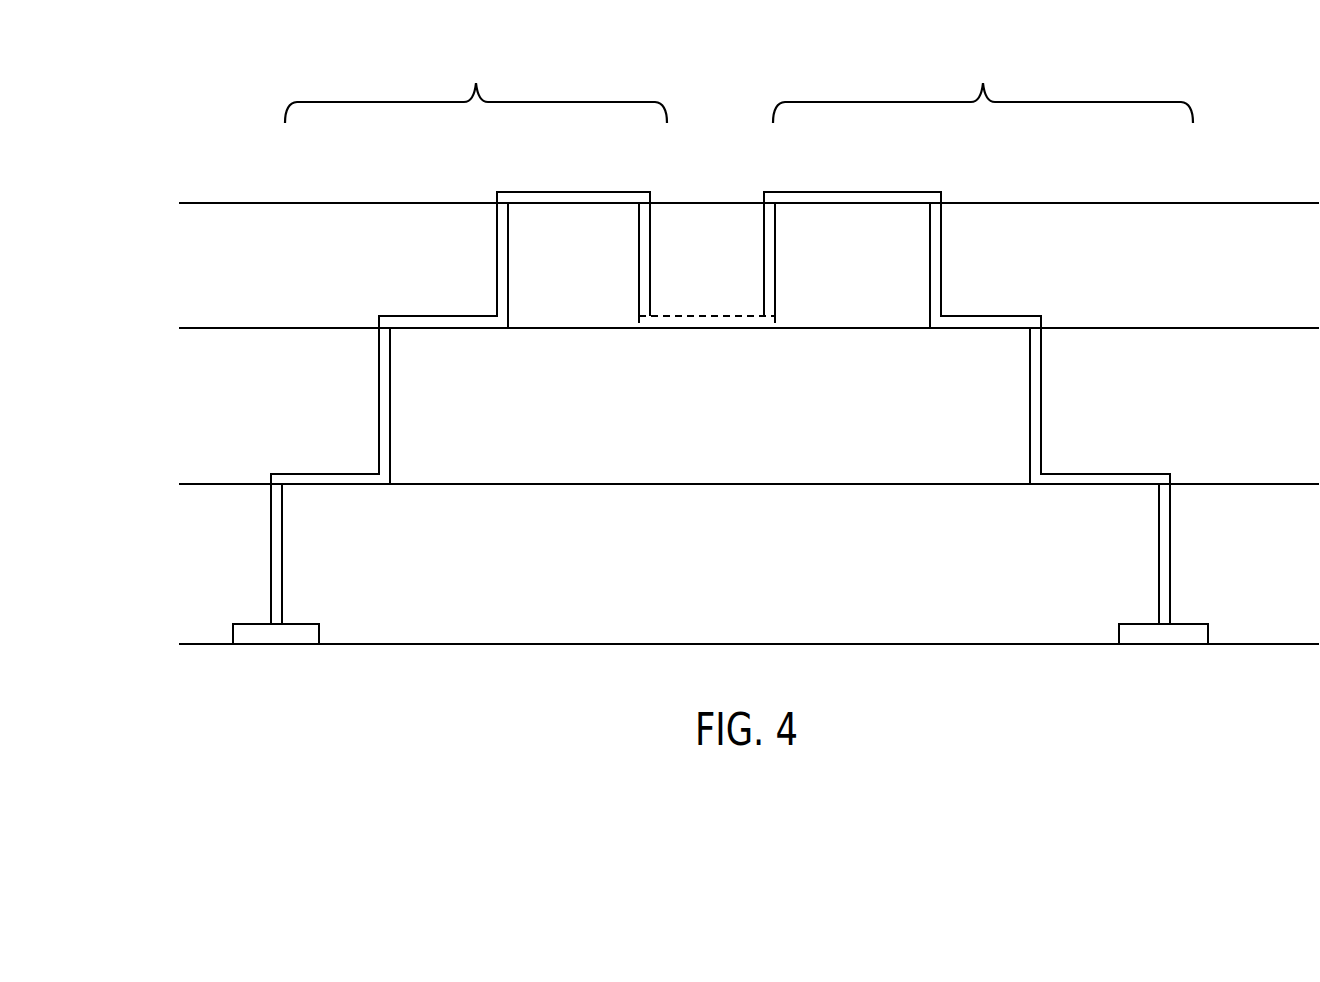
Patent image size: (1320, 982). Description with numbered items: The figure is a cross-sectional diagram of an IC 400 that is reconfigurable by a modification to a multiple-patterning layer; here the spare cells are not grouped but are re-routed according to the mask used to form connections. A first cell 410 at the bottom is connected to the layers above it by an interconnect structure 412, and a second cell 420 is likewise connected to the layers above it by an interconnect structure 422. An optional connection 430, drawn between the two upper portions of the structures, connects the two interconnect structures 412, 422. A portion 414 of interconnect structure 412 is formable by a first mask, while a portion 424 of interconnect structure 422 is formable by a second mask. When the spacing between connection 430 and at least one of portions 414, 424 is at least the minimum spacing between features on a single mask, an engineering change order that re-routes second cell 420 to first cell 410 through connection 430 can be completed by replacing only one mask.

The IC 400 is at (1248, 95).
The first cell 410 is at (282, 633).
The interconnect structure 412 is at (476, 88).
The portion 414 is at (448, 323).
The second cell 420 is at (1164, 634).
The interconnect structure 422 is at (983, 88).
The portion 424 is at (988, 324).
The connection 430 is at (707, 342).